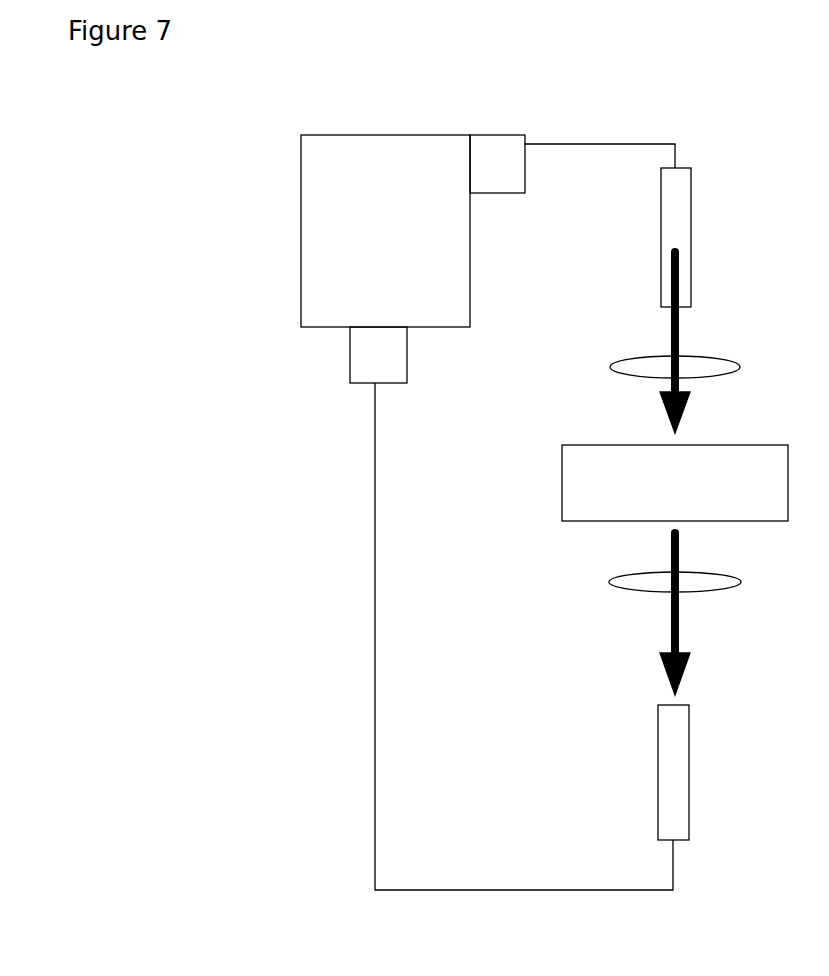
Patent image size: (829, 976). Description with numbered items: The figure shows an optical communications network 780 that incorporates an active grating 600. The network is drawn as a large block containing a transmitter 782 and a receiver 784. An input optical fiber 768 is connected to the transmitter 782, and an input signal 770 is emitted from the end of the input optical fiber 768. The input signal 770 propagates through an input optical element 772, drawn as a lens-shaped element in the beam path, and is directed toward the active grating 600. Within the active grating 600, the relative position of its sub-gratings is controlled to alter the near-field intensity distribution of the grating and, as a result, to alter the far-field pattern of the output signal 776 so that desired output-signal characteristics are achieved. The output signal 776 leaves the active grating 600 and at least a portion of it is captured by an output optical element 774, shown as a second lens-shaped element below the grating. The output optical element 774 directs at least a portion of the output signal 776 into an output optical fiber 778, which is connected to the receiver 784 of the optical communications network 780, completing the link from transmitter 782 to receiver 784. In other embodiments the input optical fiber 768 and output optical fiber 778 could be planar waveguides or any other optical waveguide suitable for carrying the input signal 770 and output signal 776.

The active grating 600 is at (618, 512).
The input optical fiber 768 is at (675, 228).
The input signal 770 is at (672, 323).
The input optical element 772 is at (643, 367).
The output optical element 774 is at (655, 583).
The output signal 776 is at (662, 640).
The output optical fiber 778 is at (673, 782).
The optical communications network 780 is at (390, 294).
The transmitter 782 is at (514, 180).
The receiver 784 is at (394, 373).